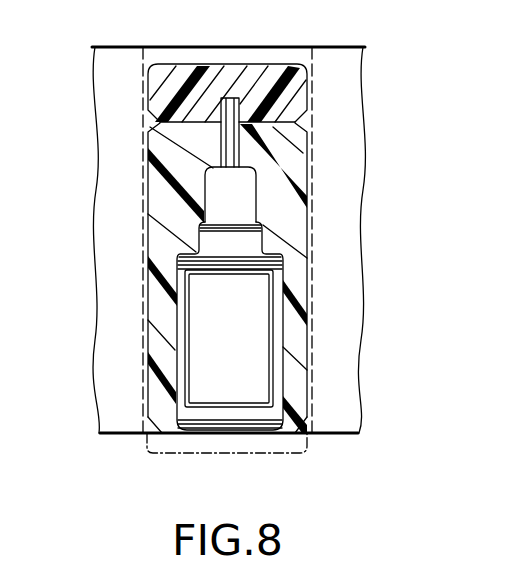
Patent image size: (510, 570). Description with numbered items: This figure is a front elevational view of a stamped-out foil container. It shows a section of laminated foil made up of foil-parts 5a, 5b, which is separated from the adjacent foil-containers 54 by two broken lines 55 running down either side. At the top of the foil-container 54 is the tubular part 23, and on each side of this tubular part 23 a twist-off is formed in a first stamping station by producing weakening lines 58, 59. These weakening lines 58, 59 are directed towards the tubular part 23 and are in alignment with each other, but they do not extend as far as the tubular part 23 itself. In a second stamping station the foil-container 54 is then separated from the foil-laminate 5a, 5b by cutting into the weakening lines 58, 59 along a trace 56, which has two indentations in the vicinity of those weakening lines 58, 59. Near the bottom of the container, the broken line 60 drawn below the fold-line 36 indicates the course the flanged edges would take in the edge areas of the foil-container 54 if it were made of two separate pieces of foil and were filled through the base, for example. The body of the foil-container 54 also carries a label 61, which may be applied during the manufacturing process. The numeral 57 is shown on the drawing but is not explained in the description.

The foil-part 5a is at (286, 240).
The foil-part 5b is at (340, 119).
The tubular part 23 is at (226, 100).
The fold-line 36 is at (163, 437).
The foil-container 54 is at (267, 415).
The broken lines 55 is at (143, 258).
The trace 56 is at (313, 182).
The cap block 57 is at (313, 85).
The weakening line 58 is at (180, 116).
The weakening line 59 is at (264, 118).
The broken line 60 is at (221, 455).
The label 61 is at (248, 333).